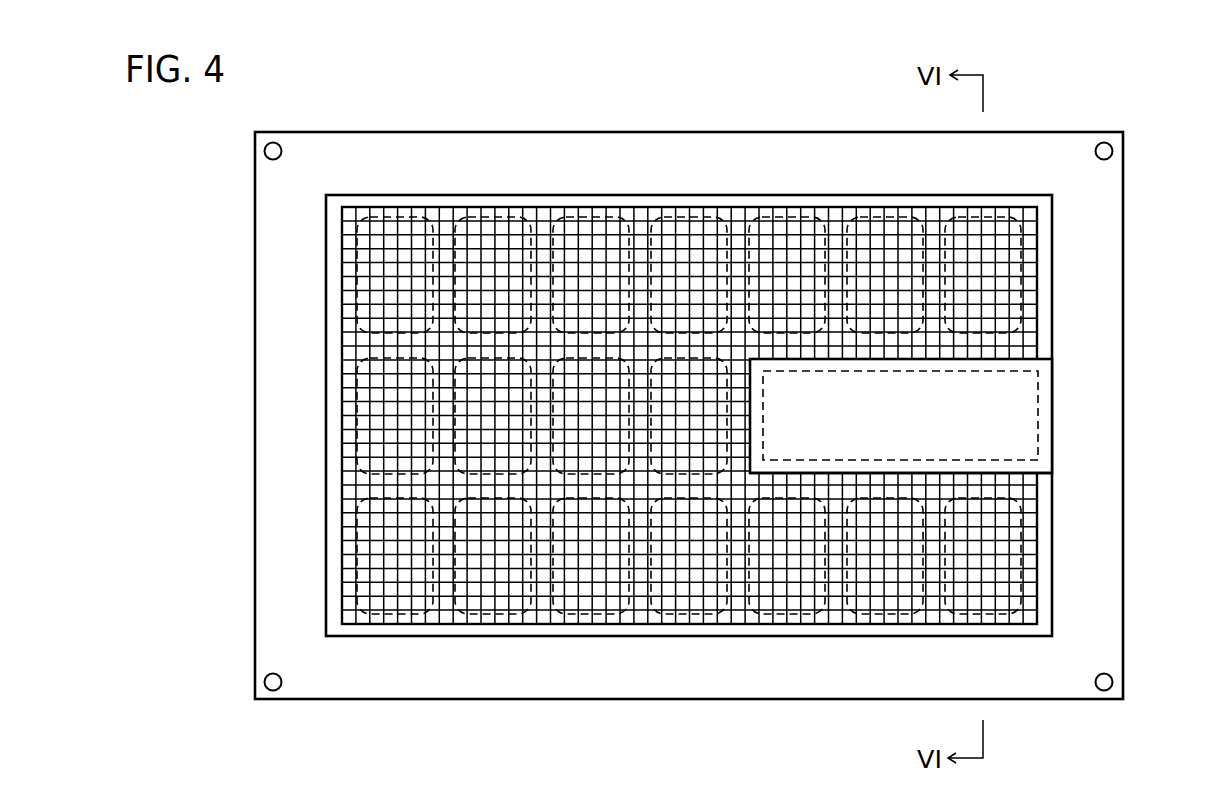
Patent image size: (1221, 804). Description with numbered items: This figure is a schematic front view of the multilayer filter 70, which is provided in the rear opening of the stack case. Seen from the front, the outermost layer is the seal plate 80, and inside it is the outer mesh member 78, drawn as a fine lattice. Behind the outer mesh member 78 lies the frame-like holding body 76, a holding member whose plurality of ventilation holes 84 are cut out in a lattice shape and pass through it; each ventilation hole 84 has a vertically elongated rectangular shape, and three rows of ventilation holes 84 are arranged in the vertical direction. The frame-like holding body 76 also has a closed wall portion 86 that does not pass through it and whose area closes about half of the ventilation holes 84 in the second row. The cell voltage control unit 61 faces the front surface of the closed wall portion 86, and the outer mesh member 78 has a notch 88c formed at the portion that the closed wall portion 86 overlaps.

The multilayer filter 70 is at (1054, 112).
The seal plate 80 is at (1097, 523).
The outer mesh member 78 is at (738, 226).
The ventilation holes 84 is at (1015, 247).
The closed wall portion 86 is at (1028, 383).
The frame-like holding body 76 is at (981, 415).
The notch 88c is at (975, 473).
The cell voltage control unit 61 is at (1038, 420).